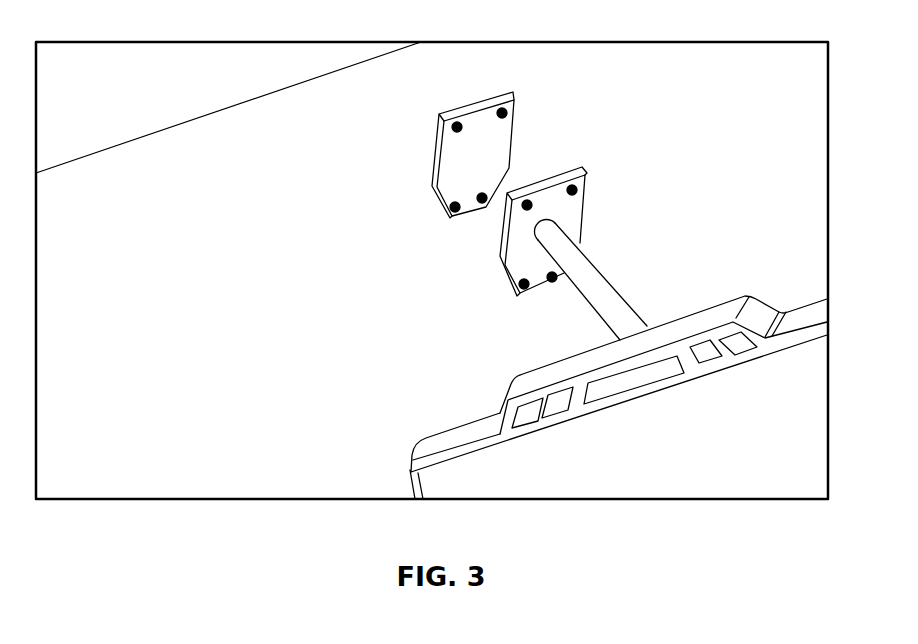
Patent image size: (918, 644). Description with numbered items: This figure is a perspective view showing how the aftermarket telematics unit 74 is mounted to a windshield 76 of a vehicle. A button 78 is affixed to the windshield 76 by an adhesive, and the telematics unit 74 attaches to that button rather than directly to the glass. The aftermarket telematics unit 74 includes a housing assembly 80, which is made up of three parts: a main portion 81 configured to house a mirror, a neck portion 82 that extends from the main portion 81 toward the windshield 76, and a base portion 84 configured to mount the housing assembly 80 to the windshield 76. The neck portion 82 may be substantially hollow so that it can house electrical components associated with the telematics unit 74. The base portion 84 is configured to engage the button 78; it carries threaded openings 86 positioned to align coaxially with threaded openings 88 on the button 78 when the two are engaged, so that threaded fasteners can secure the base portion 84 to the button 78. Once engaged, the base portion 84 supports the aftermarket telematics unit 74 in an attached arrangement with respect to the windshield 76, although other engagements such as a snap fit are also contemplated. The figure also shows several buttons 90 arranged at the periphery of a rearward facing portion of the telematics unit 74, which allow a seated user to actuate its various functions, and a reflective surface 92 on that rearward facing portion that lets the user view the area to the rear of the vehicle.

The aftermarket telematics unit 74 is at (751, 268).
The windshield 76 is at (232, 122).
The button 78 is at (509, 128).
The housing assembly 80 is at (699, 310).
The main portion 81 is at (660, 328).
The neck portion 82 is at (590, 263).
The base portion 84 is at (578, 202).
The threaded openings 86 is at (527, 200).
The threaded openings 88 is at (456, 122).
The buttons 90 is at (535, 423).
The reflective surface 92 is at (428, 482).